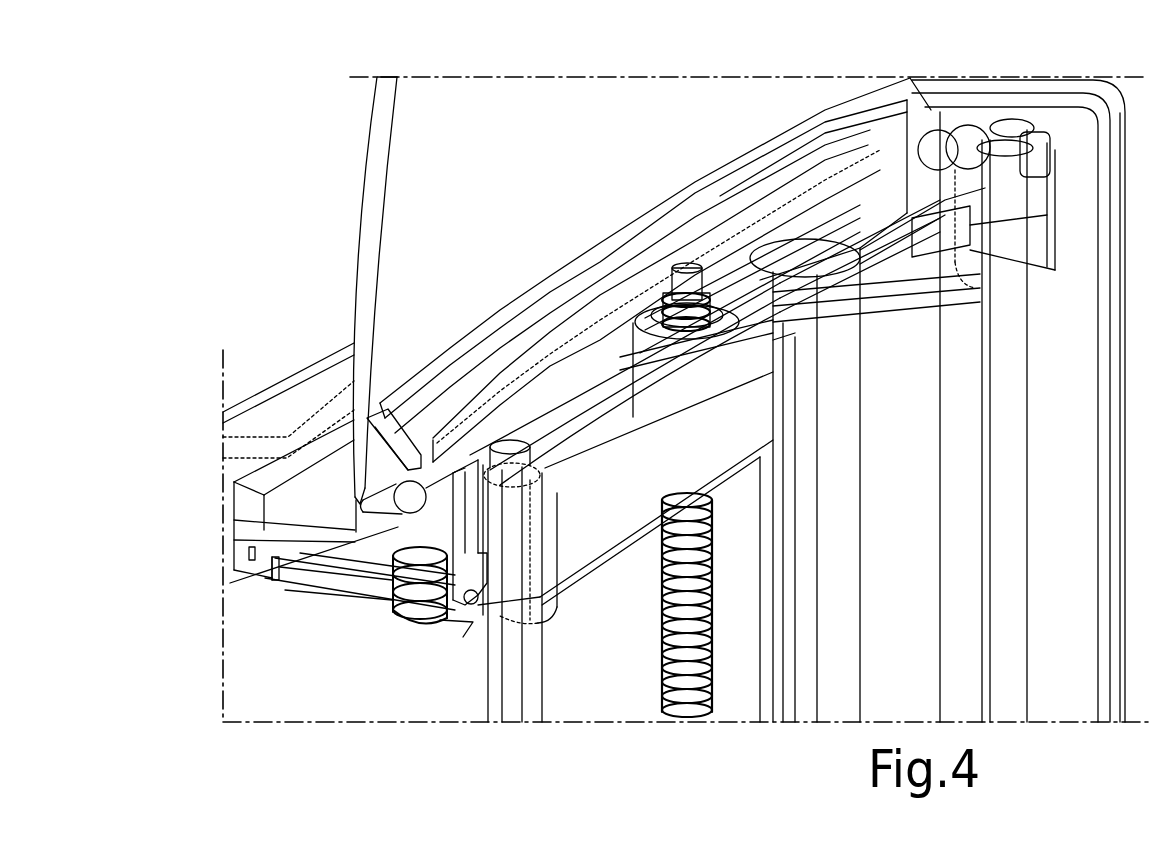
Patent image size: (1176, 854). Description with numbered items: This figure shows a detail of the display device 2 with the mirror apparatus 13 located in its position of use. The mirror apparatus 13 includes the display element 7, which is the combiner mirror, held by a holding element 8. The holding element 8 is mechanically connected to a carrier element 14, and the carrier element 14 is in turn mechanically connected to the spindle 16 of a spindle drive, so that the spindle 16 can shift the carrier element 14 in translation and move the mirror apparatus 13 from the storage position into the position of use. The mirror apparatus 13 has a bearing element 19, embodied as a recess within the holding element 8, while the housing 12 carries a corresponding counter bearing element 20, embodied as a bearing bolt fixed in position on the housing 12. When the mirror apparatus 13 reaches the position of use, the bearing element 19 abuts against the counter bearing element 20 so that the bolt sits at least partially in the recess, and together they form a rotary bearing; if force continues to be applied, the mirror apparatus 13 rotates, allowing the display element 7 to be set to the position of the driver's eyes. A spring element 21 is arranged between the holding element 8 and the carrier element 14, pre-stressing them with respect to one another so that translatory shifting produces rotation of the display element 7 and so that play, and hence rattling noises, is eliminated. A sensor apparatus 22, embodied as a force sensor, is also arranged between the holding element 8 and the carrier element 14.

The display device 2 is at (496, 57).
The display element 7 is at (638, 95).
The holding element 8 is at (382, 560).
The housing 12 is at (302, 372).
The mirror apparatus 13 is at (322, 612).
The carrier element 14 is at (468, 615).
The spindle 16 is at (660, 653).
The bearing element 19 is at (230, 583).
The counter bearing element 20 is at (357, 505).
The spring element 21 is at (422, 620).
The sensor apparatus 22 is at (478, 606).